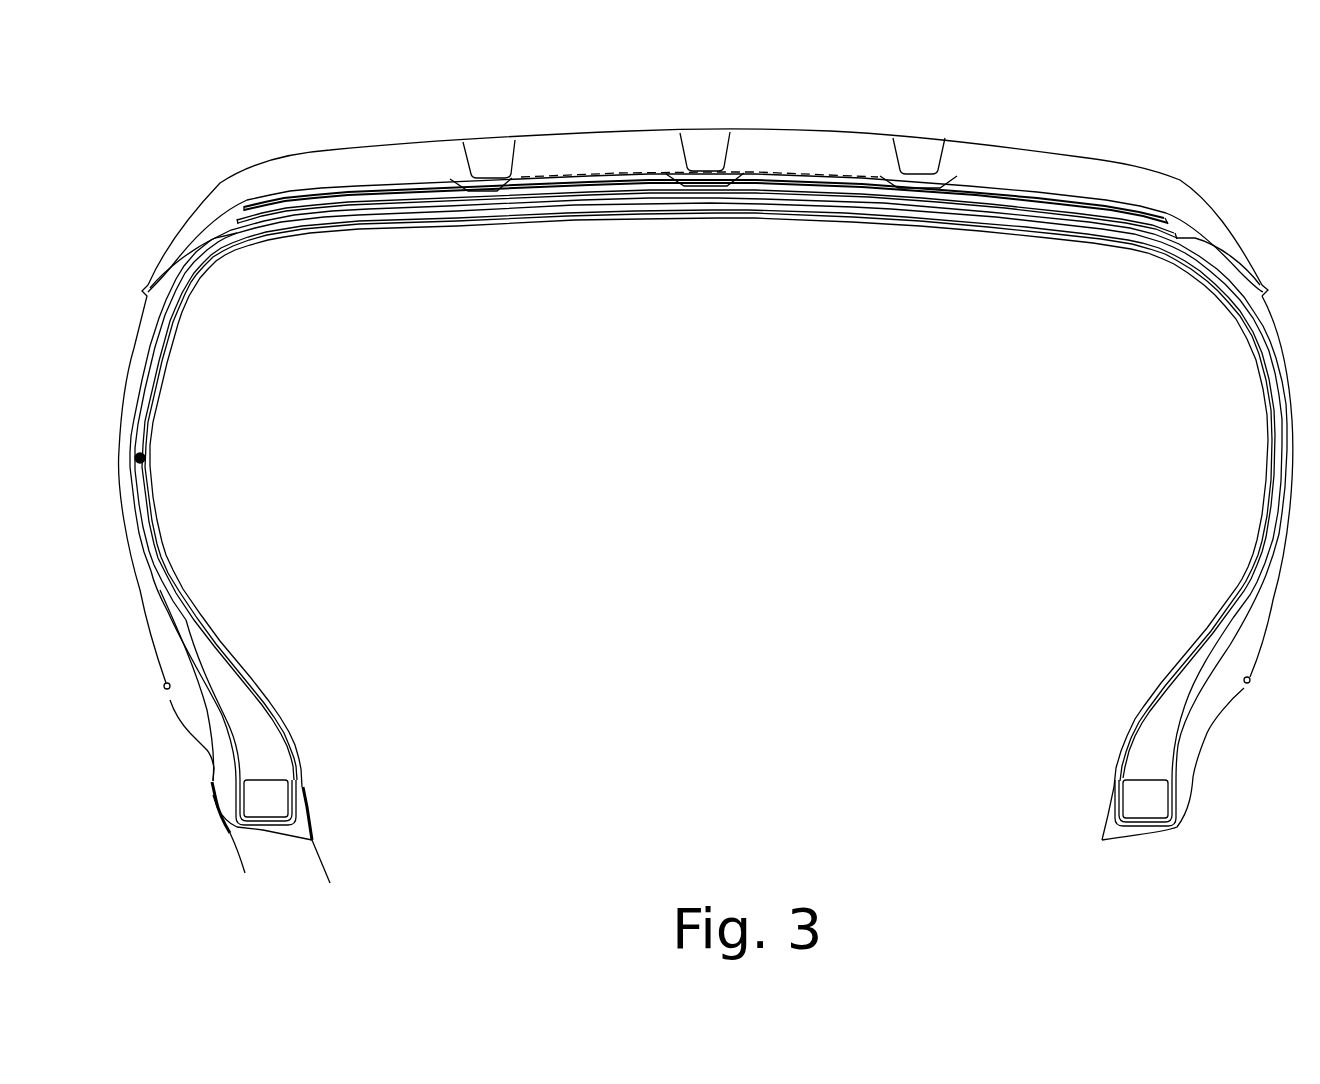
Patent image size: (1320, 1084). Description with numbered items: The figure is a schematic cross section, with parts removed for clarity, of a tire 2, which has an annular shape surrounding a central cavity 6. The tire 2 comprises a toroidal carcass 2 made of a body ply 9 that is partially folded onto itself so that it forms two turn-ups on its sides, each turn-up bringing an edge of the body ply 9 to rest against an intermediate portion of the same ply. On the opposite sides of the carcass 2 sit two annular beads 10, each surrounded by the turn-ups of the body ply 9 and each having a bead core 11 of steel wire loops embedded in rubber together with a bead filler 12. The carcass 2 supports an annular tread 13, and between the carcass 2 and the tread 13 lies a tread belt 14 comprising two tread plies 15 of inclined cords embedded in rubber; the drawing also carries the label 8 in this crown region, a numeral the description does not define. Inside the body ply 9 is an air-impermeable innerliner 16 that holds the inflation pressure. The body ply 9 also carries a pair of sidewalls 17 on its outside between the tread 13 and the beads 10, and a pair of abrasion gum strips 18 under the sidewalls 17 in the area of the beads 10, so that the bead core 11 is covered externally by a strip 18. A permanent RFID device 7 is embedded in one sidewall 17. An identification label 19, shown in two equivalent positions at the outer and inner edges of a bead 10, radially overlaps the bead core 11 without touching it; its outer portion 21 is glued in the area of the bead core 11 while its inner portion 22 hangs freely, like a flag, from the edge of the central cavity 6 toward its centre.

The tire 2 is at (156, 104).
The central cavity 6 is at (1160, 884).
The permanent RFID device 7 is at (142, 458).
The tread 8 is at (780, 103).
The body ply 9 is at (250, 248).
The annular bead 10 is at (330, 711).
The bead core 11 is at (262, 792).
The bead filler 12 is at (236, 705).
The tread 13 is at (601, 150).
The tread belt 14 is at (570, 200).
The tread ply 15 is at (835, 195).
The innerliner 16 is at (370, 232).
The sidewall 17 is at (128, 410).
The abrasion gum strip 18 is at (188, 713).
The identification label 19 is at (185, 835).
The outer portion 21 is at (210, 800).
The inner portion 22 is at (238, 860).